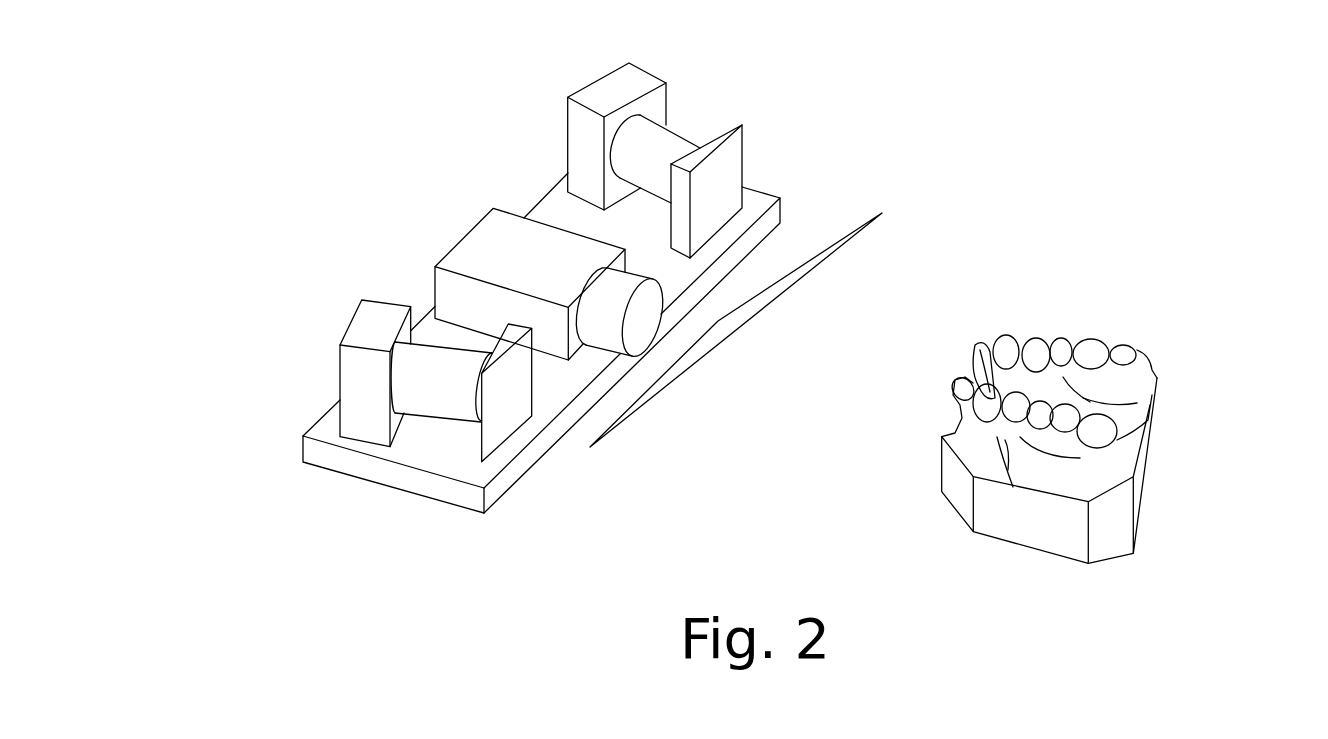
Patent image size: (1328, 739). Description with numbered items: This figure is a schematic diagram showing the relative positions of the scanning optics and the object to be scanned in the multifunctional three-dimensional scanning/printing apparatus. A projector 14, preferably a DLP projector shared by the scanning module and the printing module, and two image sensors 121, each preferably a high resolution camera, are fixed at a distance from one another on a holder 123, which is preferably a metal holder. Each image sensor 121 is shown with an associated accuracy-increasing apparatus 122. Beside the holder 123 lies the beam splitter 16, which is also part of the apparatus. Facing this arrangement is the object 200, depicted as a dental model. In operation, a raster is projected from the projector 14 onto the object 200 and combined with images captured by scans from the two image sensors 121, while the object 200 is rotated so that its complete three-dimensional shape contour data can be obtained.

The projector 14 is at (495, 248).
The beam splitter 16 is at (795, 283).
The image sensor 121 is at (363, 375).
The accuracy-increasing apparatus 122 is at (507, 417).
The holder 123 is at (437, 458).
The object 200 is at (1130, 408).